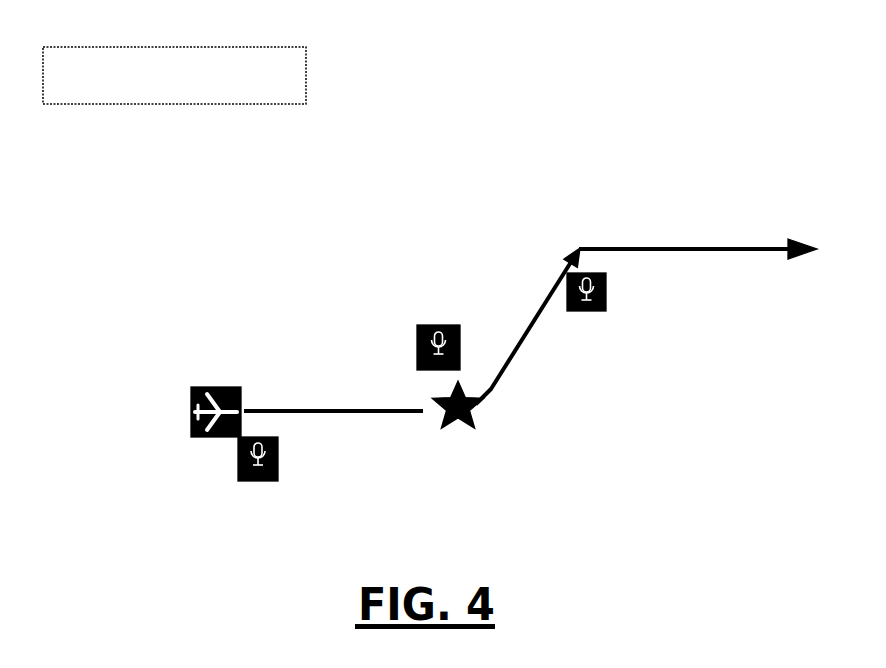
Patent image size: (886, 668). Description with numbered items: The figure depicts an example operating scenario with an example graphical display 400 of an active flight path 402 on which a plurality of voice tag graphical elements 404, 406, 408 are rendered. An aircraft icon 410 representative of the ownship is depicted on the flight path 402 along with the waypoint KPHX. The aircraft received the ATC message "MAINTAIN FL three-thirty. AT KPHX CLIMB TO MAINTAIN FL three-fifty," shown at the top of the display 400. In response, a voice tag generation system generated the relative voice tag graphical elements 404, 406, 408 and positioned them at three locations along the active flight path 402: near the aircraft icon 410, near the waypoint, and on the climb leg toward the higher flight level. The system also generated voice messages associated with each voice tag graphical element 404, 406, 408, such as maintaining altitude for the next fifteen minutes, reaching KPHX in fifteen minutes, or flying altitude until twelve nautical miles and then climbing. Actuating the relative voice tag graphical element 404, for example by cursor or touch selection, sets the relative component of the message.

The graphical display 400 is at (606, 129).
The active flight path 402 is at (333, 419).
The relative voice tag graphical element 404 is at (238, 492).
The relative voice tag graphical element 406 is at (426, 320).
The relative voice tag graphical element 408 is at (592, 329).
The aircraft icon 410 is at (212, 385).